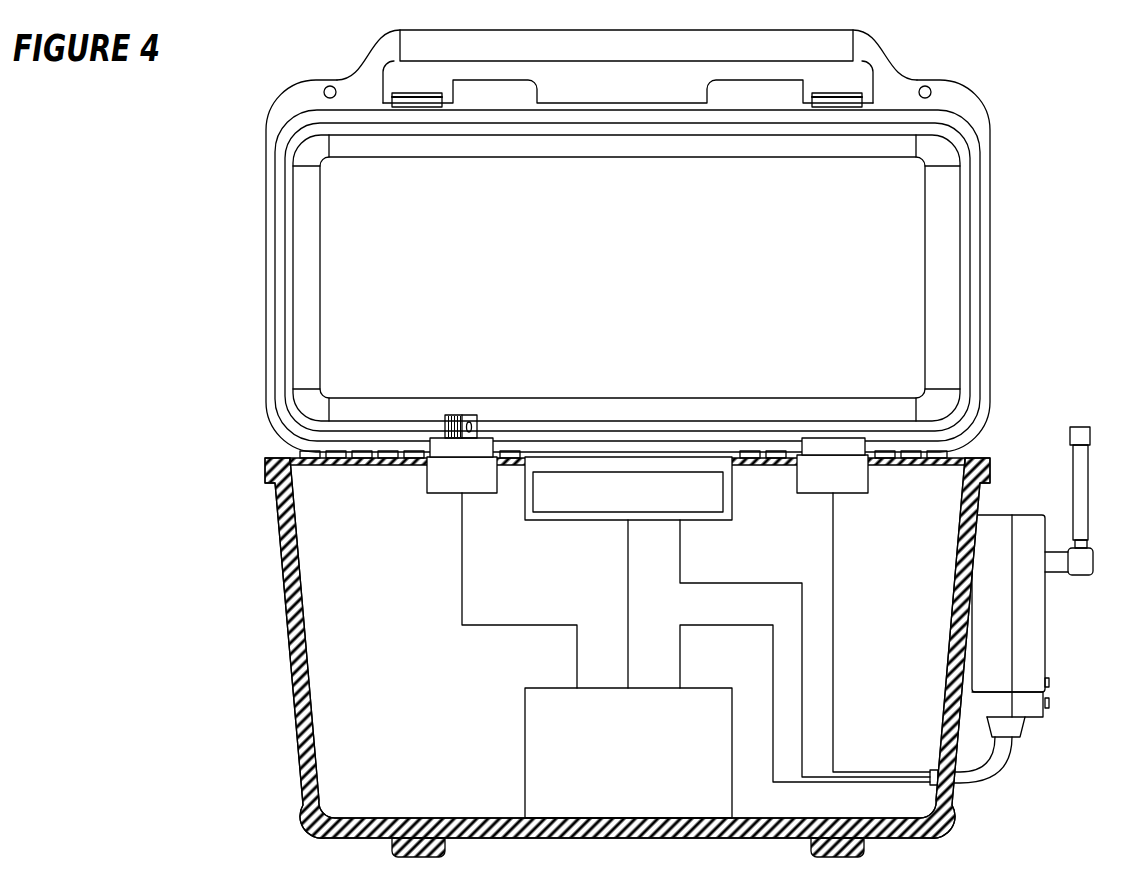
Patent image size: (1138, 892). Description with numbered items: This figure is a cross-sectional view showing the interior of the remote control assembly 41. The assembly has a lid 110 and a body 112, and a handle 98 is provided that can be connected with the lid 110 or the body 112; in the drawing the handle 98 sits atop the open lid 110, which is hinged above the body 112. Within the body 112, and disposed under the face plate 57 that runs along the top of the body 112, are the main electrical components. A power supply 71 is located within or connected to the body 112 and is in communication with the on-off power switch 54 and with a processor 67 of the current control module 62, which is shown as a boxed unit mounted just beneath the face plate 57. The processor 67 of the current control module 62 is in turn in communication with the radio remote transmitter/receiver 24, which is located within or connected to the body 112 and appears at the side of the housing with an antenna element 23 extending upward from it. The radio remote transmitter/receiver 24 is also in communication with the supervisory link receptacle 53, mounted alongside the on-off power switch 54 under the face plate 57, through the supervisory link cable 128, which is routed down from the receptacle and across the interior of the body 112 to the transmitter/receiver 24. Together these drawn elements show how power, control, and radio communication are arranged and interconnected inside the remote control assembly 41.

The remote control assembly 41 is at (1015, 407).
The handle 98 is at (888, 46).
The lid 110 is at (975, 92).
The face plate 57 is at (292, 458).
The body 112 is at (290, 641).
The on-off power switch 54 is at (427, 480).
The supervisory link receptacle 53 is at (868, 480).
The current control module 62 is at (525, 508).
The processor 67 is at (732, 491).
The supervisory link cable 128 is at (833, 623).
The power supply 71 is at (525, 752).
The radio remote transmitter/receiver 24 is at (1045, 616).
The tube 23 is at (1090, 436).